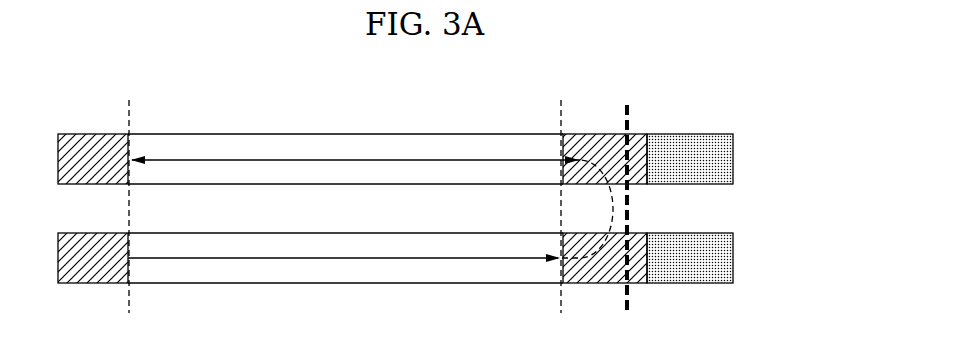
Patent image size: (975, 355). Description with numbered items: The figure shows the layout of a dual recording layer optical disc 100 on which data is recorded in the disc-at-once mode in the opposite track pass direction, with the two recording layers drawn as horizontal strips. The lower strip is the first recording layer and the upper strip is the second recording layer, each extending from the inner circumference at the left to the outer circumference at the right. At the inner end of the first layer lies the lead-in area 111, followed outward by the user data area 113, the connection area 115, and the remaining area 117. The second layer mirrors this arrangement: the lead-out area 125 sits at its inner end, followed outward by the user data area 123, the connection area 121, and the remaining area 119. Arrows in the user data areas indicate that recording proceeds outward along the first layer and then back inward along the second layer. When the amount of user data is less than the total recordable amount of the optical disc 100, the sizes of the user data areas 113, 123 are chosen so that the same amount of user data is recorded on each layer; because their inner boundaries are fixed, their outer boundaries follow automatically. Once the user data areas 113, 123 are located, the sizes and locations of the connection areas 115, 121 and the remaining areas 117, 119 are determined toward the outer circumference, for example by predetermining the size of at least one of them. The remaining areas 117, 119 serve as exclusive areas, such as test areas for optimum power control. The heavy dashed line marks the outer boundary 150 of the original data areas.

The optical disc 100 is at (757, 116).
The lead-in area 111 is at (95, 277).
The user data area 113 is at (355, 273).
The connection area 115 is at (593, 275).
The remaining area 117 is at (703, 275).
The remaining area 119 is at (703, 142).
The connection area 121 is at (590, 140).
The user data area 123 is at (356, 145).
The lead-out area 125 is at (95, 143).
The outer boundary of original data areas 150 is at (632, 118).